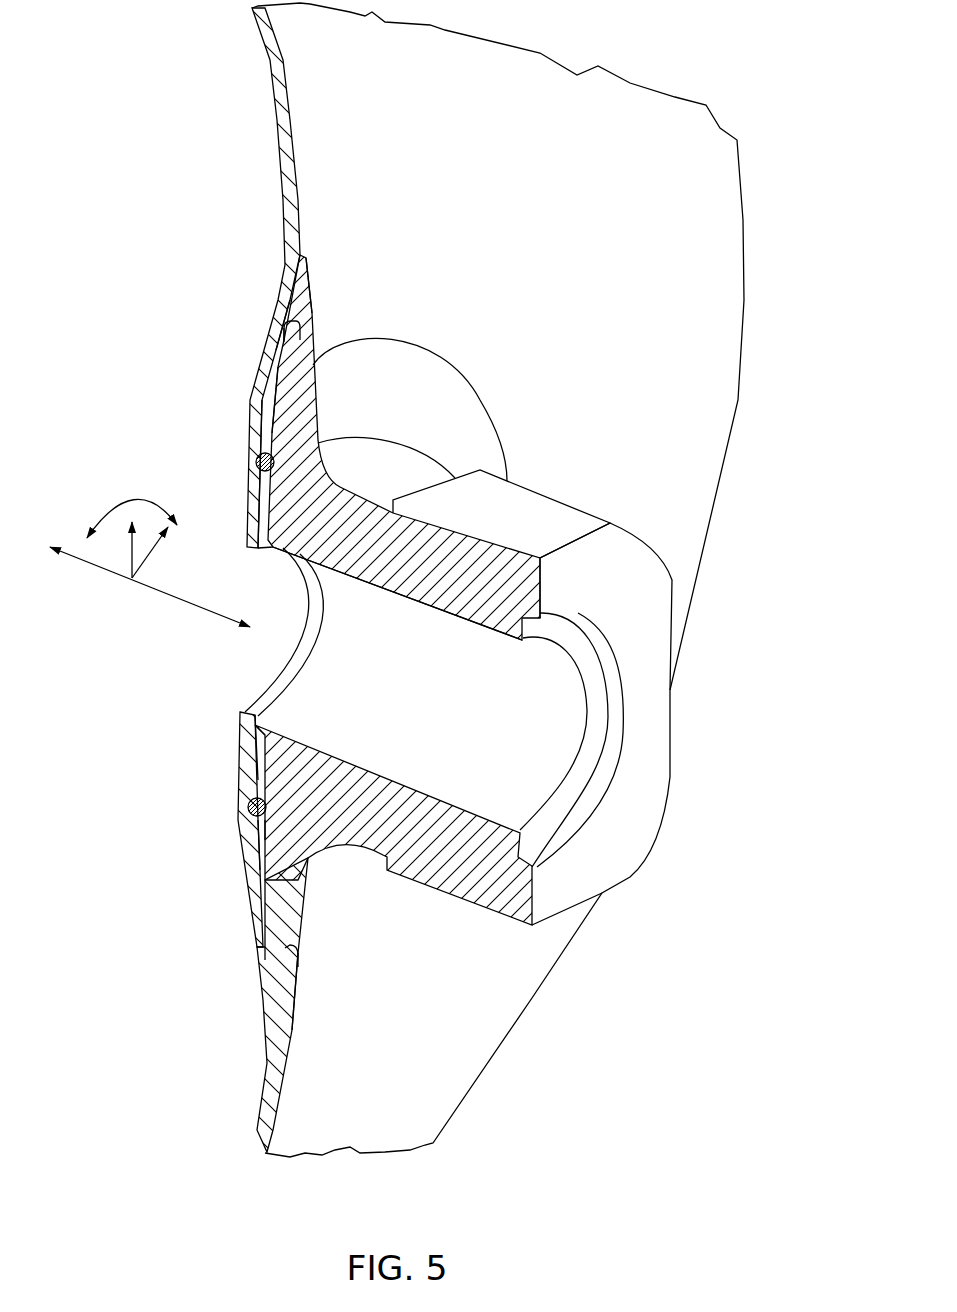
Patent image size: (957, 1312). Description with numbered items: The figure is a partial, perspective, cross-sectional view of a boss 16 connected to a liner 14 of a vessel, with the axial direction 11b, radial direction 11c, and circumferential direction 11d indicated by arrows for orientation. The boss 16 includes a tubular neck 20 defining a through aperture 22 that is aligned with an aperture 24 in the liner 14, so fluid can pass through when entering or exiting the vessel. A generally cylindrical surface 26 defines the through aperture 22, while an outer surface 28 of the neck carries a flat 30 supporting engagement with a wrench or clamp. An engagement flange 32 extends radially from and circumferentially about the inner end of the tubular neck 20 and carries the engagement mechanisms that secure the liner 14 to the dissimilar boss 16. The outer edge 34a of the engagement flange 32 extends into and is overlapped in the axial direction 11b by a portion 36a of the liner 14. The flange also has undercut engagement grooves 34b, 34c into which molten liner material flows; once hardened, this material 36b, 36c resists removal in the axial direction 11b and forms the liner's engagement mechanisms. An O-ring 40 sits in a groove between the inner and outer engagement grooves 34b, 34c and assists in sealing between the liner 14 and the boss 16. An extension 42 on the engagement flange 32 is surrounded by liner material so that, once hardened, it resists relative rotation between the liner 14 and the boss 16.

The liner 14 is at (472, 195).
The boss 16 is at (603, 378).
The tubular neck 20 is at (441, 812).
The through aperture 22 is at (528, 728).
The aperture 24 is at (295, 683).
The surface 26 is at (459, 628).
The surface 28 is at (592, 541).
The flat 30 is at (488, 524).
The engagement flange 32 is at (385, 358).
The outer edge 34a is at (286, 326).
The engagement groove 34b is at (284, 416).
The engagement groove 34c is at (302, 566).
The overlapping portion 36a is at (312, 340).
The hardened material 36b is at (284, 368).
The hardened material 36c is at (270, 525).
The O-ring 40 is at (275, 456).
The extension 42 is at (299, 371).
The axial direction 11b is at (80, 562).
The radial direction 11c is at (134, 580).
The circumferential direction 11d is at (133, 492).